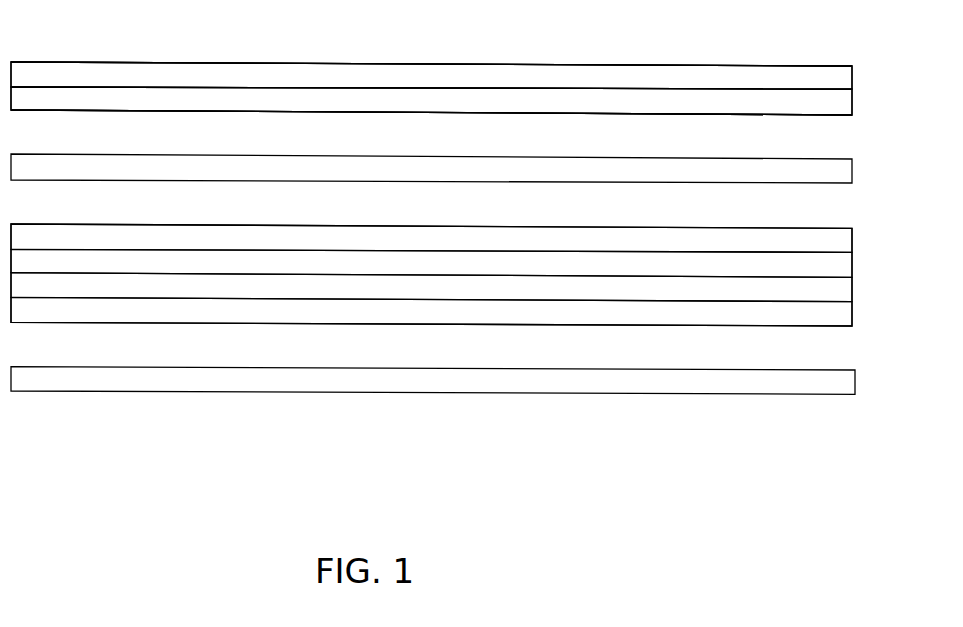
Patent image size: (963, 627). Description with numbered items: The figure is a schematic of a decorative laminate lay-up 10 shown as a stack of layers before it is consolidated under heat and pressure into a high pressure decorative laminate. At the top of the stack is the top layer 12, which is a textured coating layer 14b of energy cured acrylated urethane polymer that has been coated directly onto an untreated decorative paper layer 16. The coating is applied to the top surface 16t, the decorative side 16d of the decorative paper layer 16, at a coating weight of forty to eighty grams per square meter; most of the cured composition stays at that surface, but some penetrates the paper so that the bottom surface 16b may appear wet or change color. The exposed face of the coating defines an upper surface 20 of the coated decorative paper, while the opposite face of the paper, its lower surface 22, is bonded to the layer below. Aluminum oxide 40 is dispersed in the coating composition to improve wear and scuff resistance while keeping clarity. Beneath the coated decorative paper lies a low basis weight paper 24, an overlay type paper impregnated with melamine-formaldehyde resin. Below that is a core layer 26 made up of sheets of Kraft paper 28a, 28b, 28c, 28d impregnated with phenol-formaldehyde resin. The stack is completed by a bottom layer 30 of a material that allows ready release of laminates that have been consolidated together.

The laminate lay-up 10 is at (176, 424).
The top layer 12 is at (437, 64).
The textured coating layer 14b is at (431, 75).
The decorative paper layer 16 is at (431, 101).
The top surface of the decorative paper layer 16t is at (153, 87).
The decorative side of the decorative paper layer 16d is at (213, 87).
The bottom surface of the decorative paper layer 16b is at (168, 111).
The upper surface 20 is at (553, 64).
The bottom surface of first layer assembly 22 is at (635, 105).
The low basis weight paper layer 24 is at (431, 168).
The core layer 26 is at (862, 231).
The Kraft paper sheet 28a is at (431, 238).
The Kraft paper sheet 28b is at (431, 263).
The Kraft paper sheet 28c is at (431, 287).
The Kraft paper sheet 28d is at (431, 311).
The bottom layer 30 is at (433, 381).
The aluminum oxide 40 is at (734, 79).